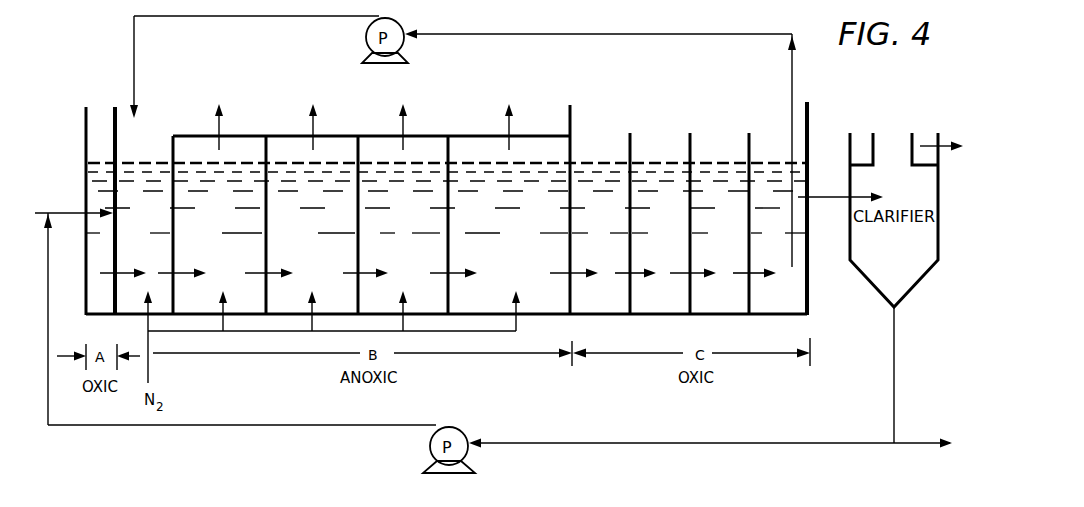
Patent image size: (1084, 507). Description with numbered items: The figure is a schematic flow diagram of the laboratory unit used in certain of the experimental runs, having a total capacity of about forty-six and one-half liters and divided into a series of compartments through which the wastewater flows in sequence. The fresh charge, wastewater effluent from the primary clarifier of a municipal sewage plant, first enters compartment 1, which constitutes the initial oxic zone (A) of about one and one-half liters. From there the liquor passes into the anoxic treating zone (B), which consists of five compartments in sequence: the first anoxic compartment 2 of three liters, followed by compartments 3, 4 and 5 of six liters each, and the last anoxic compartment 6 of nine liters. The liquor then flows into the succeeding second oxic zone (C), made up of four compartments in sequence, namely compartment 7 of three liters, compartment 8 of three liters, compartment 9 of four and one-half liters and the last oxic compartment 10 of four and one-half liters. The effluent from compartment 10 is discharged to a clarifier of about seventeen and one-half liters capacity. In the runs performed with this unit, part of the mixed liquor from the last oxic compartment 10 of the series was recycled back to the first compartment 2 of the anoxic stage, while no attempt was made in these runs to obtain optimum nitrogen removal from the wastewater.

The first compartment 1 is at (100, 272).
The first anoxic compartment 2 is at (136, 211).
The anoxic compartment 3 is at (212, 225).
The anoxic compartment 4 is at (301, 225).
The anoxic compartment 5 is at (395, 225).
The last anoxic compartment 6 is at (500, 225).
The first oxic compartment of zone C 7 is at (590, 272).
The oxic compartment 8 is at (652, 272).
The oxic compartment 9 is at (709, 272).
The last oxic compartment 10 is at (770, 208).